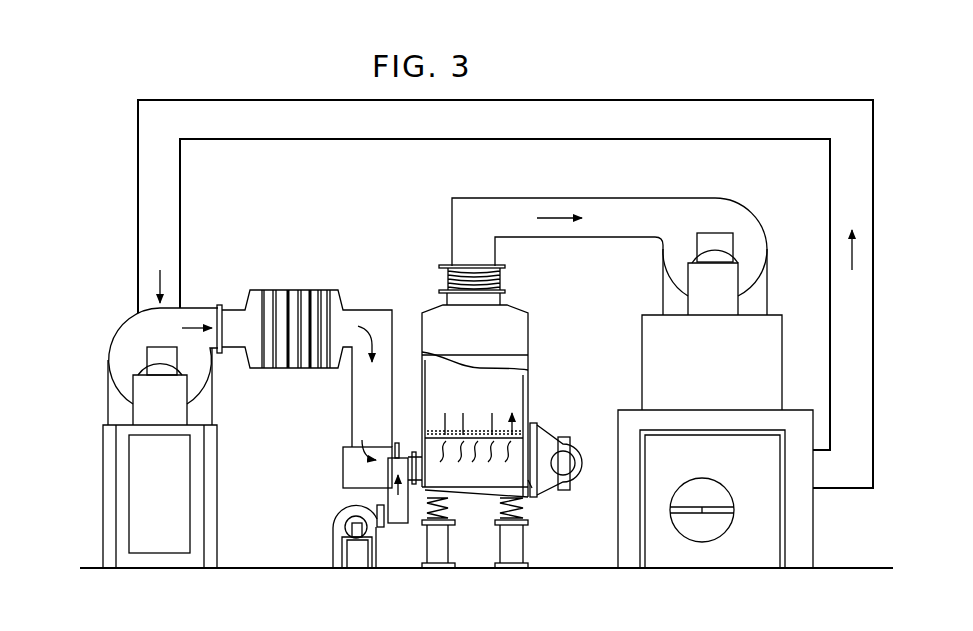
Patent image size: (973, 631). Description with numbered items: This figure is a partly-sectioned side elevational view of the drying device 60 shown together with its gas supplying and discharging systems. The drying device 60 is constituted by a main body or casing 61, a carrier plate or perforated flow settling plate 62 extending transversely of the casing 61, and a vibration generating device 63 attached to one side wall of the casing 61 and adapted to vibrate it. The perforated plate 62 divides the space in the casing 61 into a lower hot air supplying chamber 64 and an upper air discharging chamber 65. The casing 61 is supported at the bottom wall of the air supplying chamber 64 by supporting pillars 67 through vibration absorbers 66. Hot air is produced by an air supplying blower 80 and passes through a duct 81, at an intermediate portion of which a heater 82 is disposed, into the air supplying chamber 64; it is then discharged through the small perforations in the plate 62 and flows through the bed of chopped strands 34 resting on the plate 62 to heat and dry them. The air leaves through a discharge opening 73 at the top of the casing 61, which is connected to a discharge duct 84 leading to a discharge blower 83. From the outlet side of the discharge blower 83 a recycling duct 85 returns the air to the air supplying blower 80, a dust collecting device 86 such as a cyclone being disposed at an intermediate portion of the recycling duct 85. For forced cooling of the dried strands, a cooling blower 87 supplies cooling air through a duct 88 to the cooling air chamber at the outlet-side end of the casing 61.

The chopped strands 34 is at (474, 407).
The drying device 60 is at (494, 391).
The casing 61 is at (530, 385).
The perforated flow settling plate 62 is at (475, 466).
The vibration generating device 63 is at (543, 433).
The hot air supplying chamber 64 is at (532, 488).
The air discharging chamber 65 is at (430, 368).
The vibration absorbers 66 is at (446, 510).
The supporting pillars 67 is at (437, 560).
The discharge opening 73 is at (507, 298).
The air supplying blower 80 is at (202, 313).
The duct 81 is at (343, 462).
The heater 82 is at (318, 292).
The discharge blower 83 is at (757, 228).
The discharge duct 84 is at (653, 200).
The recycling duct 85 is at (876, 170).
The dust collecting device 86 is at (767, 525).
The cooling blower 87 is at (340, 520).
The duct 88 is at (398, 523).